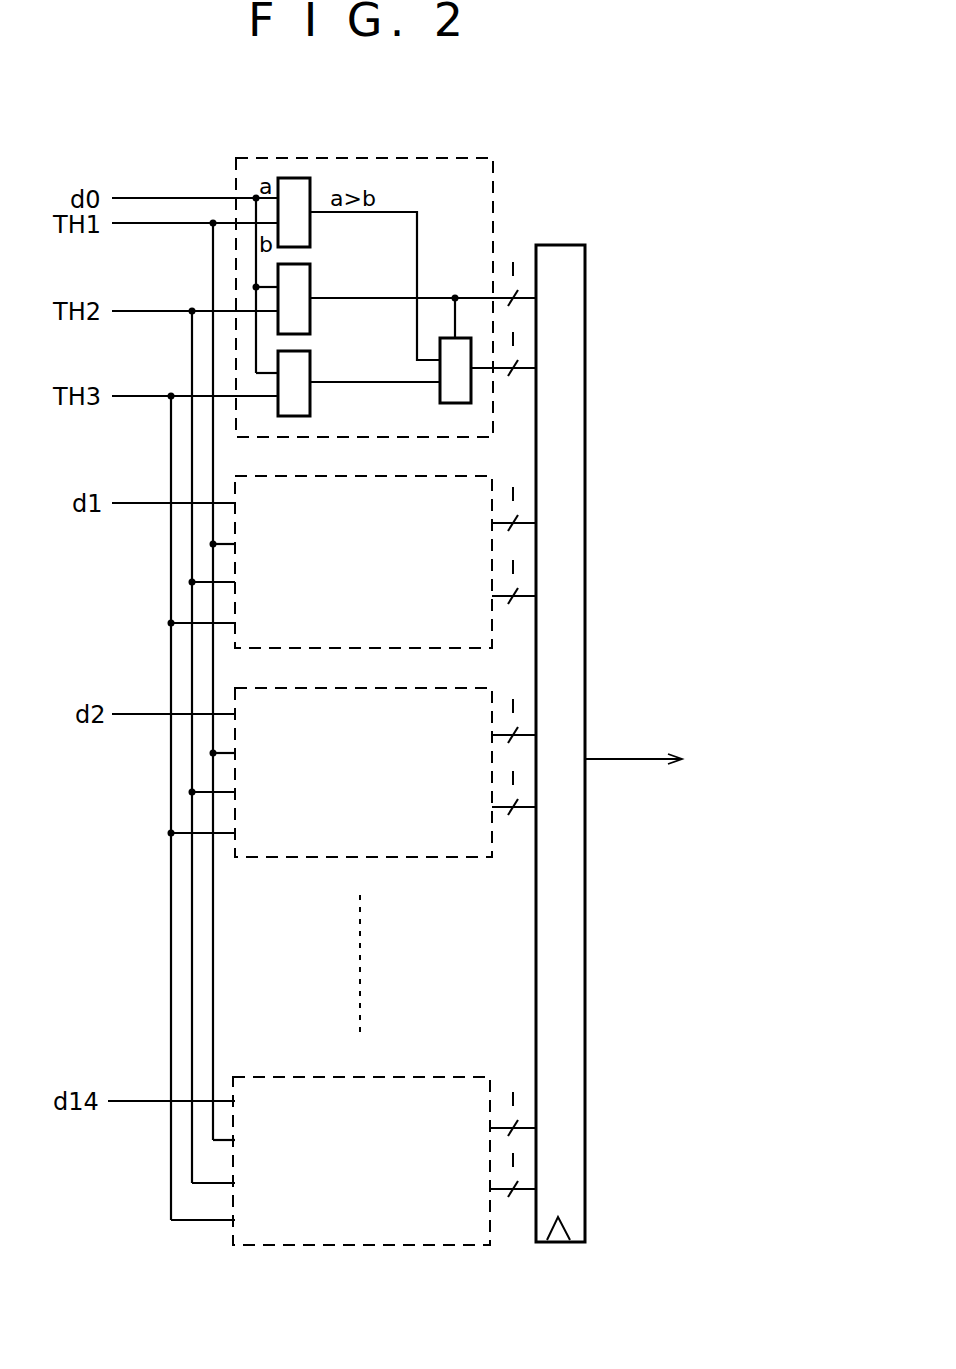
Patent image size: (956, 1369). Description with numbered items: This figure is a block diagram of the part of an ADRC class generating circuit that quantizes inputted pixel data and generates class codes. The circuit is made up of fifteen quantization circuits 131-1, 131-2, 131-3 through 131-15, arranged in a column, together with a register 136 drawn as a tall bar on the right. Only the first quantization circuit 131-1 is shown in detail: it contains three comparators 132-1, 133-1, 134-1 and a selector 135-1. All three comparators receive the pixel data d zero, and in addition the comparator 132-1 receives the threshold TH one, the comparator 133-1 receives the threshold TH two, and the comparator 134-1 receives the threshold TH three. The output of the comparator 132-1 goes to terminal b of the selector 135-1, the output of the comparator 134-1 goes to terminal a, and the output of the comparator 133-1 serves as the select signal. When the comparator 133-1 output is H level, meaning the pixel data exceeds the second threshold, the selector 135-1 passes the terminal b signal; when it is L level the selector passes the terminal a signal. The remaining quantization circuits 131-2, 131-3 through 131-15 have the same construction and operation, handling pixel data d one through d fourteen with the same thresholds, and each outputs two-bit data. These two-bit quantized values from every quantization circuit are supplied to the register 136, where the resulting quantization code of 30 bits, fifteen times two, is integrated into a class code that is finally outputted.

The quantization circuit 131-1 is at (448, 158).
The quantization circuit 131-2 is at (381, 648).
The quantization circuit 131-3 is at (381, 857).
The quantization circuit 131-15 is at (365, 1247).
The comparator 132-1 is at (310, 235).
The comparator 133-1 is at (310, 322).
The comparator 134-1 is at (310, 405).
The selector 135-1 is at (440, 371).
The register 136 is at (585, 1082).
The quantization code bits 30 is at (622, 768).